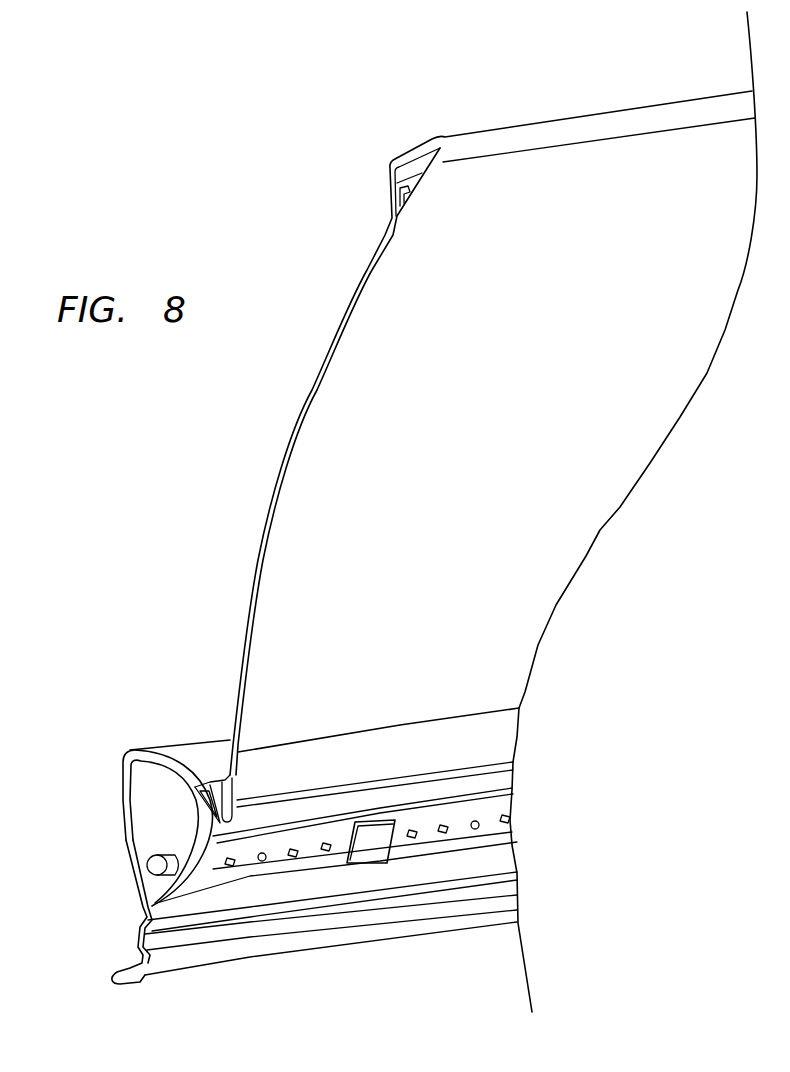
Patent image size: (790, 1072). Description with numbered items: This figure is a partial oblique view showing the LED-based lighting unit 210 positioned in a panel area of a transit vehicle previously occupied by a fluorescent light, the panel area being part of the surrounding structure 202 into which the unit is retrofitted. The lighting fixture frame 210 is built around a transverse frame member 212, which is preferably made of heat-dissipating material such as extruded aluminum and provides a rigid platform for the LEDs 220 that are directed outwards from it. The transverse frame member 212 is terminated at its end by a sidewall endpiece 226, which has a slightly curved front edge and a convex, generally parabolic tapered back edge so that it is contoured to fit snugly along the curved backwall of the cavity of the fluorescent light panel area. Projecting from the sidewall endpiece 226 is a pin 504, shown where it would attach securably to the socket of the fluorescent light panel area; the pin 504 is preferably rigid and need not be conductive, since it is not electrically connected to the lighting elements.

The door outer panel 202 is at (280, 468).
The LED-based lighting fixture frame 210 is at (153, 807).
The transverse frame member 212 is at (308, 860).
The LEDs 220 is at (443, 835).
The sidewall endpiece 226 is at (145, 890).
The pin 504 is at (147, 860).